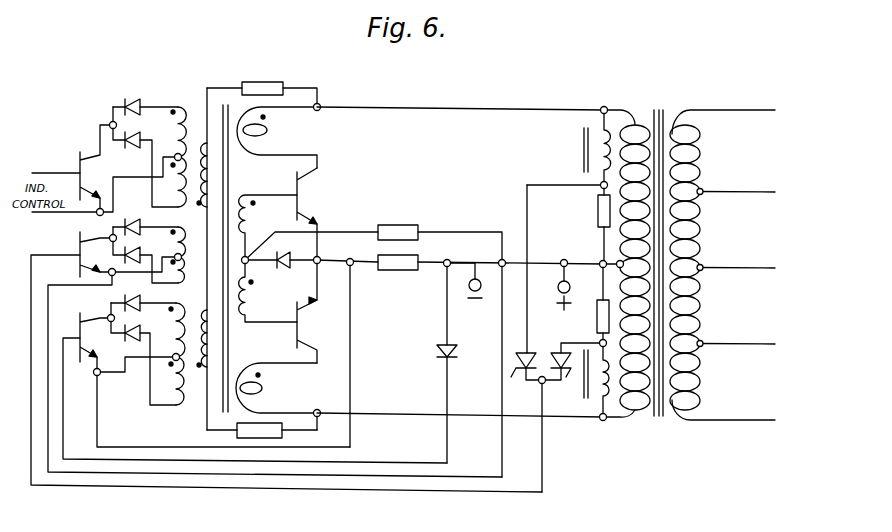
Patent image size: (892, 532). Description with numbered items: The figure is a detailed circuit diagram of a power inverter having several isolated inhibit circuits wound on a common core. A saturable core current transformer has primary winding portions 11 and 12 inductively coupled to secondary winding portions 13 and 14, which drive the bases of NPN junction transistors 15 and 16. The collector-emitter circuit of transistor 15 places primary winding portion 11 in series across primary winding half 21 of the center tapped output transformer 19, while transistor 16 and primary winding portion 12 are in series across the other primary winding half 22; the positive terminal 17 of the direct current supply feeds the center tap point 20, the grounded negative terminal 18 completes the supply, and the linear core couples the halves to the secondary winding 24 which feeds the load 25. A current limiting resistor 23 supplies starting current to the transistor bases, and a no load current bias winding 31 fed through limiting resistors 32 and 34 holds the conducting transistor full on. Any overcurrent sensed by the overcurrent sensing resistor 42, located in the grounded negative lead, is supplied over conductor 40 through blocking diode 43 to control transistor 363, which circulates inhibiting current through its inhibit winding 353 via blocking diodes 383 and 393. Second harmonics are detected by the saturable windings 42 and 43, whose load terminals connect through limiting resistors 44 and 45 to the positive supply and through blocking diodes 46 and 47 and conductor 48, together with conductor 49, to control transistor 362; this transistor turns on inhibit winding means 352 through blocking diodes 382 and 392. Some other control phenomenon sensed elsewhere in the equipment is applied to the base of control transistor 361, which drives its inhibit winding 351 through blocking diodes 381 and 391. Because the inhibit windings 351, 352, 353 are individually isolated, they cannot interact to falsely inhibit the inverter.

The primary winding portion 11 is at (265, 124).
The primary winding portion 12 is at (262, 385).
The secondary winding portion 13 is at (250, 213).
The secondary winding portion 14 is at (248, 300).
The NPN junction transistor 15 is at (297, 173).
The NPN junction transistor 16 is at (297, 338).
The positive terminal 17 is at (558, 287).
The negative terminal 18 is at (481, 277).
The output transformer 19 is at (689, 269).
The center tap point 20 is at (601, 261).
The primary winding half 21 is at (618, 163).
The primary winding half 22 is at (633, 402).
The current limiting resistor 23 is at (402, 221).
The secondary winding 24 is at (700, 226).
The load 25 is at (286, 268).
The no load current bias winding 31 is at (213, 170).
The limiting resistor 32 is at (260, 83).
The limiting resistor 34 is at (266, 426).
The inhibit winding 351 is at (176, 118).
The inhibit winding means 352 is at (187, 250).
The inhibit windings 353 is at (181, 311).
The control transistor 361 is at (79, 157).
The control transistor 362 is at (79, 240).
The control transistor 363 is at (79, 318).
The blocking diode 381 is at (133, 101).
The blocking diode 382 is at (145, 222).
The blocking diode 383 is at (143, 311).
The blocking diode 391 is at (145, 157).
The blocking diode 392 is at (145, 255).
The blocking diode 393 is at (124, 336).
The conductor 40 is at (446, 386).
The overcurrent sensing resistor / saturable winding 42 is at (402, 262).
The blocking diode / saturable winding 43 is at (436, 349).
The limiting resistor 44 is at (597, 327).
The limiting resistor 45 is at (598, 212).
The blocking diode 46 is at (572, 373).
The blocking diode 47 is at (526, 294).
The conductor 48 is at (544, 452).
The conductor 49 is at (500, 452).